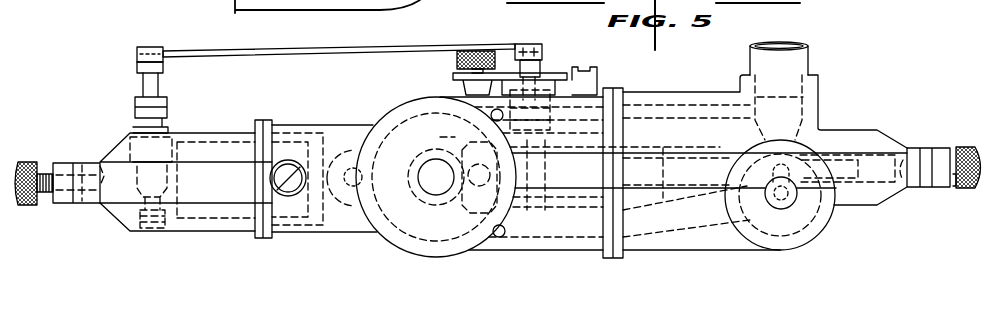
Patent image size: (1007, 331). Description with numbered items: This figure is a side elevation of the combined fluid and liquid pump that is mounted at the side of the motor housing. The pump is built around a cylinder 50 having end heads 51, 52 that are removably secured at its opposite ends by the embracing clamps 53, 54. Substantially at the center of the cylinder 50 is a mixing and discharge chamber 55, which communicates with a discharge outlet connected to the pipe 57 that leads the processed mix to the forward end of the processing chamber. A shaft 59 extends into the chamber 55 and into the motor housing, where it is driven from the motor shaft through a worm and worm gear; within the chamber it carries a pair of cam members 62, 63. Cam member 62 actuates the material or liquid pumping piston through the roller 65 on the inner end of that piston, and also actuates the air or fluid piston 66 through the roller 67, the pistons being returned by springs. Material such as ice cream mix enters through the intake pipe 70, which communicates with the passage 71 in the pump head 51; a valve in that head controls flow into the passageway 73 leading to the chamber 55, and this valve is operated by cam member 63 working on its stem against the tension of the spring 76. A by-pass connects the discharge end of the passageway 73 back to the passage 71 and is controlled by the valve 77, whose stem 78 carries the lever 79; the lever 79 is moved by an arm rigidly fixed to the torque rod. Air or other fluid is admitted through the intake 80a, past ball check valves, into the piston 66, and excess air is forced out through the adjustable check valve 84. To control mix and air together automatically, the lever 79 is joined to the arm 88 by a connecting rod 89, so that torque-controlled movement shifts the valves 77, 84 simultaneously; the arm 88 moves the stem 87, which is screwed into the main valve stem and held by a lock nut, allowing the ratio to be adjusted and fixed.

The cylinder 50 is at (352, 228).
The end head 51 is at (707, 243).
The end head 52 is at (212, 228).
The embracing clamp 53 is at (915, 183).
The embracing clamp 54 is at (110, 193).
The mixing and discharge chamber 55 is at (435, 243).
The pipe 57 is at (354, 5).
The shaft 59 is at (430, 193).
The cam member 62 is at (405, 212).
The cam member 63 is at (447, 138).
The roller 65 is at (465, 200).
The air or fluid piston 66 is at (218, 142).
The roller 67 is at (336, 157).
The intake pipe 70 is at (806, 62).
The passage 71 is at (802, 112).
The passageway 73 is at (650, 237).
The spring 76 is at (700, 106).
The valve 77 is at (560, 98).
The stem 78 is at (520, 44).
The lever 79 is at (540, 48).
The intake 80a is at (150, 230).
The check valve 84 is at (138, 122).
The stem 87 is at (137, 70).
The arm 88 is at (137, 51).
The connecting rod 89 is at (278, 52).